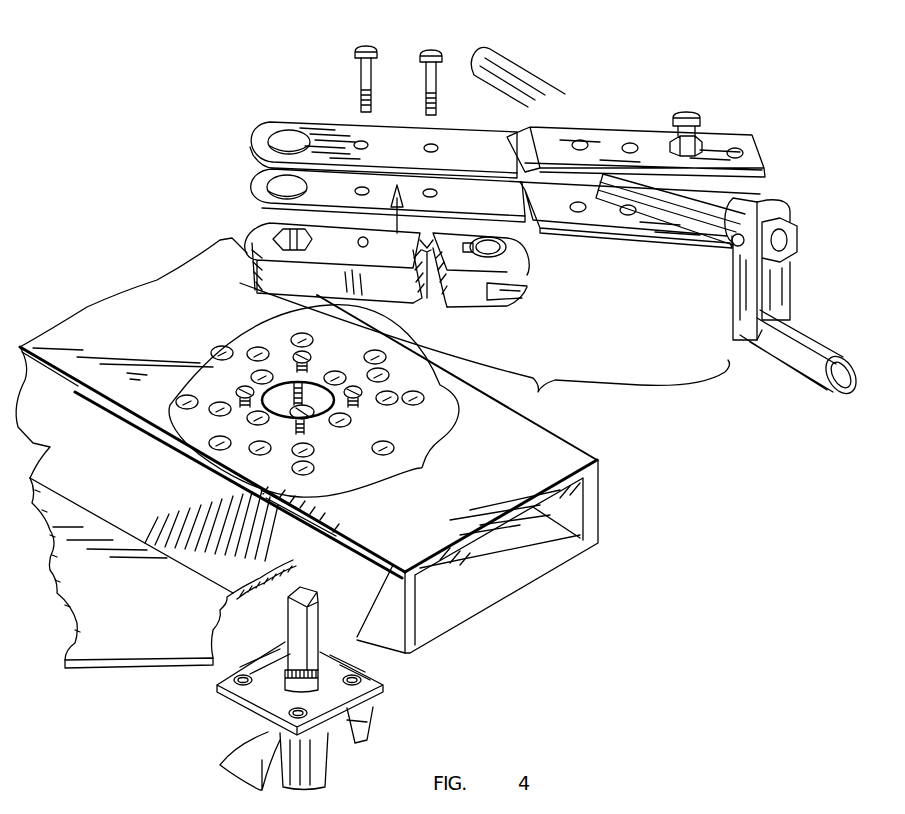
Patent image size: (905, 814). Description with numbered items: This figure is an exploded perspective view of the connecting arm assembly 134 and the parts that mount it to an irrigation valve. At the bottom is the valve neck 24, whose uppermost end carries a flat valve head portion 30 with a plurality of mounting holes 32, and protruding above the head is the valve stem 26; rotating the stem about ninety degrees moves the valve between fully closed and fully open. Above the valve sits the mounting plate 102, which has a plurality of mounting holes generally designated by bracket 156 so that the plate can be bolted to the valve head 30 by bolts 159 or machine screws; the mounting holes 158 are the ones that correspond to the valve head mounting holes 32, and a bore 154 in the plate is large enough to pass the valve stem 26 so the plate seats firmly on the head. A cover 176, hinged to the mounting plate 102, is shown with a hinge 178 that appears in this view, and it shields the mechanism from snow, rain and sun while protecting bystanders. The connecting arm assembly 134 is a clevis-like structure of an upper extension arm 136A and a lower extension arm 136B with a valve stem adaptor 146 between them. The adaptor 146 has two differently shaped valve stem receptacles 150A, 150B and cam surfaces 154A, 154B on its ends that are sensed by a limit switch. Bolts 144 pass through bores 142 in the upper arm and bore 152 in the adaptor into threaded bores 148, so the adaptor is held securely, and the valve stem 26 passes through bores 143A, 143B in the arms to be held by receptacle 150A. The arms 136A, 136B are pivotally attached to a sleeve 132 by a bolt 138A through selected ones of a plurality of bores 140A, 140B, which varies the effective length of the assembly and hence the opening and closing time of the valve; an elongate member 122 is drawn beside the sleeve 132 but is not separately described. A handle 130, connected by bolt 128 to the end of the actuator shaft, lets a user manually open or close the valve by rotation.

The bolts 144 is at (428, 52).
The bore 143A is at (293, 131).
The bores 142 is at (431, 144).
The upper extension arm 136A is at (503, 161).
The lower extension arm 136B is at (452, 207).
The bore 143B is at (267, 186).
The threaded bores 148 is at (430, 191).
The tube 122 is at (536, 80).
The bores 140A is at (632, 143).
The bolt 138A is at (692, 118).
The bores 140B is at (630, 215).
The sleeve 132 is at (713, 197).
The bolt 128 is at (735, 247).
The handle 130 is at (815, 340).
The valve stem adaptor 146 is at (349, 288).
The valve stem receptacle 150A is at (283, 232).
The valve stem receptacle 150B is at (507, 248).
The bore 152 is at (367, 246).
The cam surface 154A is at (283, 283).
The cam surface 154B is at (515, 305).
The connecting arm assembly 134 is at (484, 349).
The mounting plate 102 is at (530, 469).
The cover 176 is at (113, 601).
The hinge pin 178 is at (334, 530).
The mounting holes 156 is at (314, 401).
The bore 154 is at (318, 380).
The mounting holes 158 is at (218, 350).
The bolts 159 is at (298, 352).
The valve stem 26 is at (307, 652).
The valve head portion 30 is at (327, 704).
The mounting holes 32 is at (292, 714).
The neck 24 is at (373, 730).